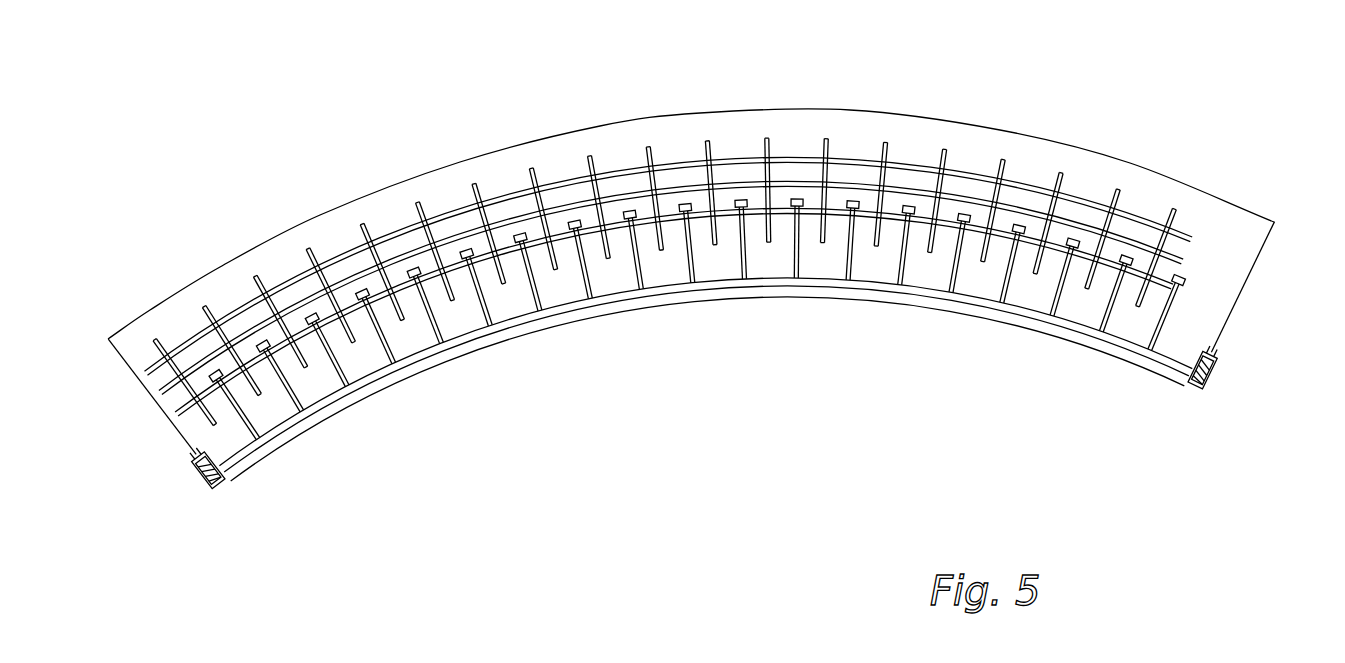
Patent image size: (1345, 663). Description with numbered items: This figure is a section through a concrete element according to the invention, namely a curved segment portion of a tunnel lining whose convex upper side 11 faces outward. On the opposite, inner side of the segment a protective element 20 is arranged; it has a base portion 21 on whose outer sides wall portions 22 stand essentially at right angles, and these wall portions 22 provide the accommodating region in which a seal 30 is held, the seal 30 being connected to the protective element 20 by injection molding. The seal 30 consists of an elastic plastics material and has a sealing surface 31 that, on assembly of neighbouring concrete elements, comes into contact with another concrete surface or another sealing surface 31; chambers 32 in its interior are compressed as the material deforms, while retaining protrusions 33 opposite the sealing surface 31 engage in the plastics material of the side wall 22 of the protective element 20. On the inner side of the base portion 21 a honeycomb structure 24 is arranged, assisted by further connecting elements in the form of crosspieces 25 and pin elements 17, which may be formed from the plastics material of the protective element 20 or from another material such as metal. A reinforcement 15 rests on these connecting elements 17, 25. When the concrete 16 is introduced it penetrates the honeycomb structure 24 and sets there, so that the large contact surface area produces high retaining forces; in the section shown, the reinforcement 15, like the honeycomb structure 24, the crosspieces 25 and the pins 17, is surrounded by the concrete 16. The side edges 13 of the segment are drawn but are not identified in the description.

The upper side 11 is at (693, 319).
The side edge 13 is at (153, 405).
The reinforcement 15 is at (400, 283).
The concrete 16 is at (453, 193).
The pin elements 17 is at (697, 245).
The crosspieces 25 is at (530, 237).
The protective element 20 is at (706, 392).
The base portion 21 is at (393, 385).
The wall portion 22 is at (714, 471).
The honeycomb structure 24 is at (612, 293).
The seal 30 is at (714, 471).
The sealing surface 31 is at (714, 471).
The chambers 32 is at (757, 471).
The retaining protrusions 33 is at (215, 480).